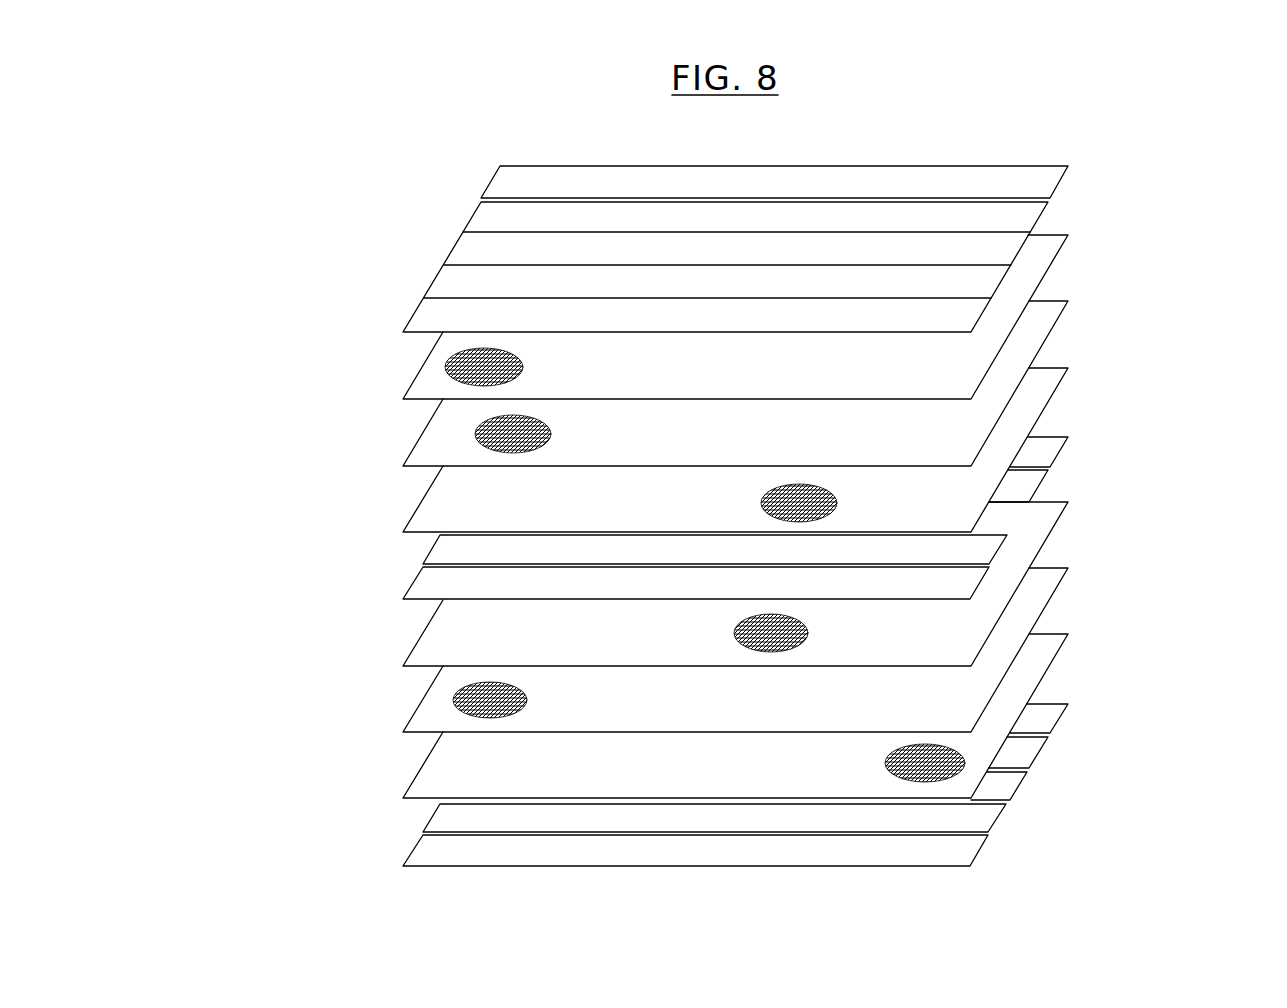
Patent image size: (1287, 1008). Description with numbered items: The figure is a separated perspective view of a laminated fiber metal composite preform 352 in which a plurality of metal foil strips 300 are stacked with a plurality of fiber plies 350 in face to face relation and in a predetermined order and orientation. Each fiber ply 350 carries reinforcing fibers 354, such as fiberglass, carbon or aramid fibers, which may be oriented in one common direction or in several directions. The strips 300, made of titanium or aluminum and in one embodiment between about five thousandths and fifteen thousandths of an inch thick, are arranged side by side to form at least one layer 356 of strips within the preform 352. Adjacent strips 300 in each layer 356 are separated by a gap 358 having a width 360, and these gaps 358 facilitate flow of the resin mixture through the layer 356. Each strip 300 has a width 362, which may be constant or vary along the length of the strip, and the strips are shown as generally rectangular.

The metal foil strip 300 is at (1040, 212).
The fiber ply 350 is at (1062, 248).
The fiber metal composite preform 352 is at (322, 346).
The reinforcing fibers 354 is at (446, 368).
The layer of strips 356 is at (1032, 140).
The gap 358 is at (1052, 200).
The gap width 360 is at (424, 297).
The strip width 362 is at (500, 166).